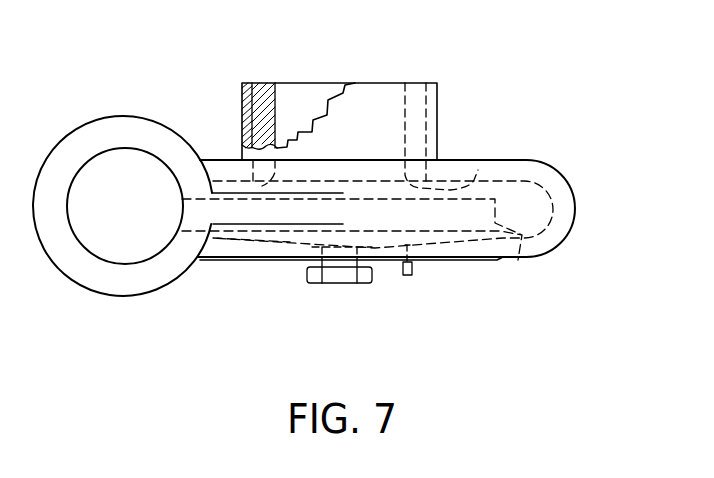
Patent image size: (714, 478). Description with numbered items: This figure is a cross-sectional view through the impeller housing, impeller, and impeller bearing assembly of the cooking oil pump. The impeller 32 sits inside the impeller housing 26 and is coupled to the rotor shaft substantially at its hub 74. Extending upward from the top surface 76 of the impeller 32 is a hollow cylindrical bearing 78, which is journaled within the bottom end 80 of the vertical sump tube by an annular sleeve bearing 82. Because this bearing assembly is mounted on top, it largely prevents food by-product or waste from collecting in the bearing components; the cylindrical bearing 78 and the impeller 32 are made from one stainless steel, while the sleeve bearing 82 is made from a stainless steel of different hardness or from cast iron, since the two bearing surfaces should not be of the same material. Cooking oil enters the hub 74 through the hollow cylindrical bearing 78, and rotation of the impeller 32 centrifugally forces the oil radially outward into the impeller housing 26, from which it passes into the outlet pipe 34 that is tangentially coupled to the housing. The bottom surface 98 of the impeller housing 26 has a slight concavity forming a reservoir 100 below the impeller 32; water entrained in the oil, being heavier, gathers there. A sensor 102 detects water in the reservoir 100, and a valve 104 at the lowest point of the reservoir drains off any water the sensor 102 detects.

The impeller housing 26 is at (578, 182).
The impeller 32 is at (518, 260).
The outlet pipe 34 is at (72, 262).
The hub 74 is at (368, 82).
The top surface 76 is at (478, 178).
The hollow cylindrical bearing 78 is at (405, 108).
The bottom end 80 is at (240, 108).
The annular sleeve bearing 82 is at (262, 92).
The bottom surface 98 is at (457, 250).
The reservoir 100 is at (310, 238).
The sensor 102 is at (412, 275).
The valve 104 is at (342, 283).